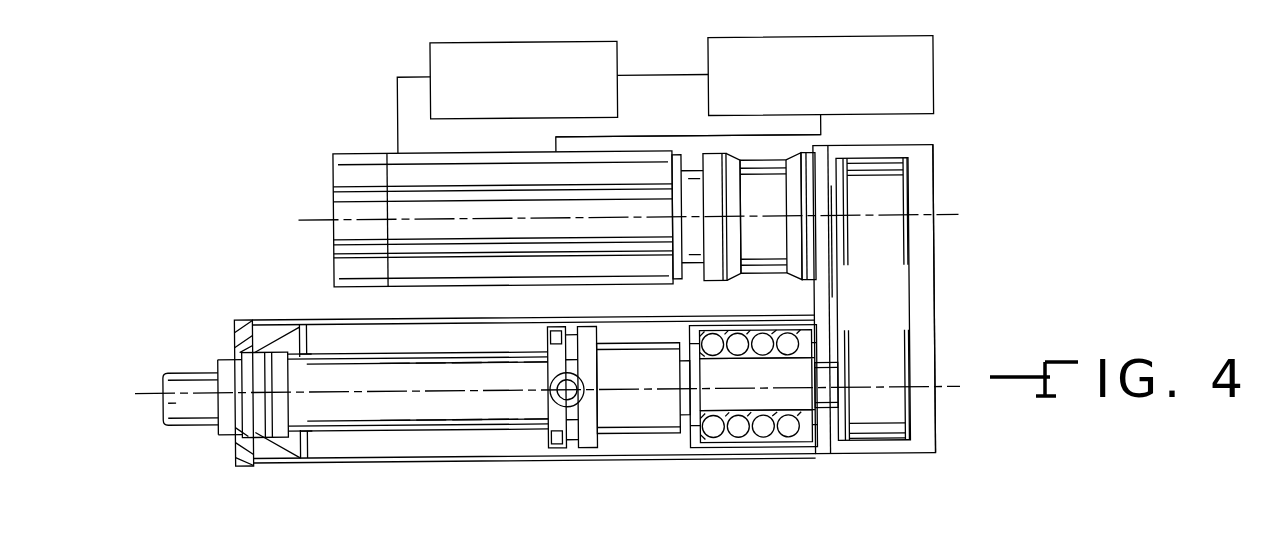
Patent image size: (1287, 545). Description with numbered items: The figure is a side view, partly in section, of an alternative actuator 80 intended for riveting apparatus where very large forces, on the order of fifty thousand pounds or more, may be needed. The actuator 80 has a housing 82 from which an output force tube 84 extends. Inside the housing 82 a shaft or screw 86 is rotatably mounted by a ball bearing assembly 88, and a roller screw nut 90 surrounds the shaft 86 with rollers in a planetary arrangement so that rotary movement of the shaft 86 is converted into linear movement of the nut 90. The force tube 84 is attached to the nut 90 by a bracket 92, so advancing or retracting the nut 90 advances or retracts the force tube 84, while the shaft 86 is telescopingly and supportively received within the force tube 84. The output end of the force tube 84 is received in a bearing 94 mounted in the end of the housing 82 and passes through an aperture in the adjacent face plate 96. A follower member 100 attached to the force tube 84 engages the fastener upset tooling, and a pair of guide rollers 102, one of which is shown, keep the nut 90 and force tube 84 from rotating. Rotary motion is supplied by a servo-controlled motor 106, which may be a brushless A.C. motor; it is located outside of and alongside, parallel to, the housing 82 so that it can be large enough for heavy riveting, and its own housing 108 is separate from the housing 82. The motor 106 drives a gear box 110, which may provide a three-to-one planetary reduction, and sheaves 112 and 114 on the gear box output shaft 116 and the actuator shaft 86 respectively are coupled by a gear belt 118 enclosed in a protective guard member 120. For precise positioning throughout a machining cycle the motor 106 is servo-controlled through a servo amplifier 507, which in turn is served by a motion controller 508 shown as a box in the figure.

The actuator 80 is at (456, 151).
The housing 82 is at (370, 468).
The output force tube 84 is at (362, 350).
The shaft or screw 86 is at (455, 404).
The ball bearing assembly 88 is at (772, 451).
The roller screw nut 90 is at (673, 441).
The bracket 92 is at (561, 453).
The bearing 94 is at (271, 467).
The face plate 96 is at (230, 335).
The follower member 100 is at (159, 405).
The guide rollers 102 is at (604, 404).
The servo-controlled motor 106 is at (641, 150).
The motor housing 108 is at (395, 150).
The gear box 110 is at (773, 276).
The sheave 112 is at (914, 200).
The sheave 114 is at (914, 410).
The gear box output shaft 116 is at (833, 198).
The gear belt 118 is at (876, 299).
The protective guard member 120 is at (940, 325).
The servo amplifier 507 is at (455, 44).
The motion controller 508 is at (886, 38).